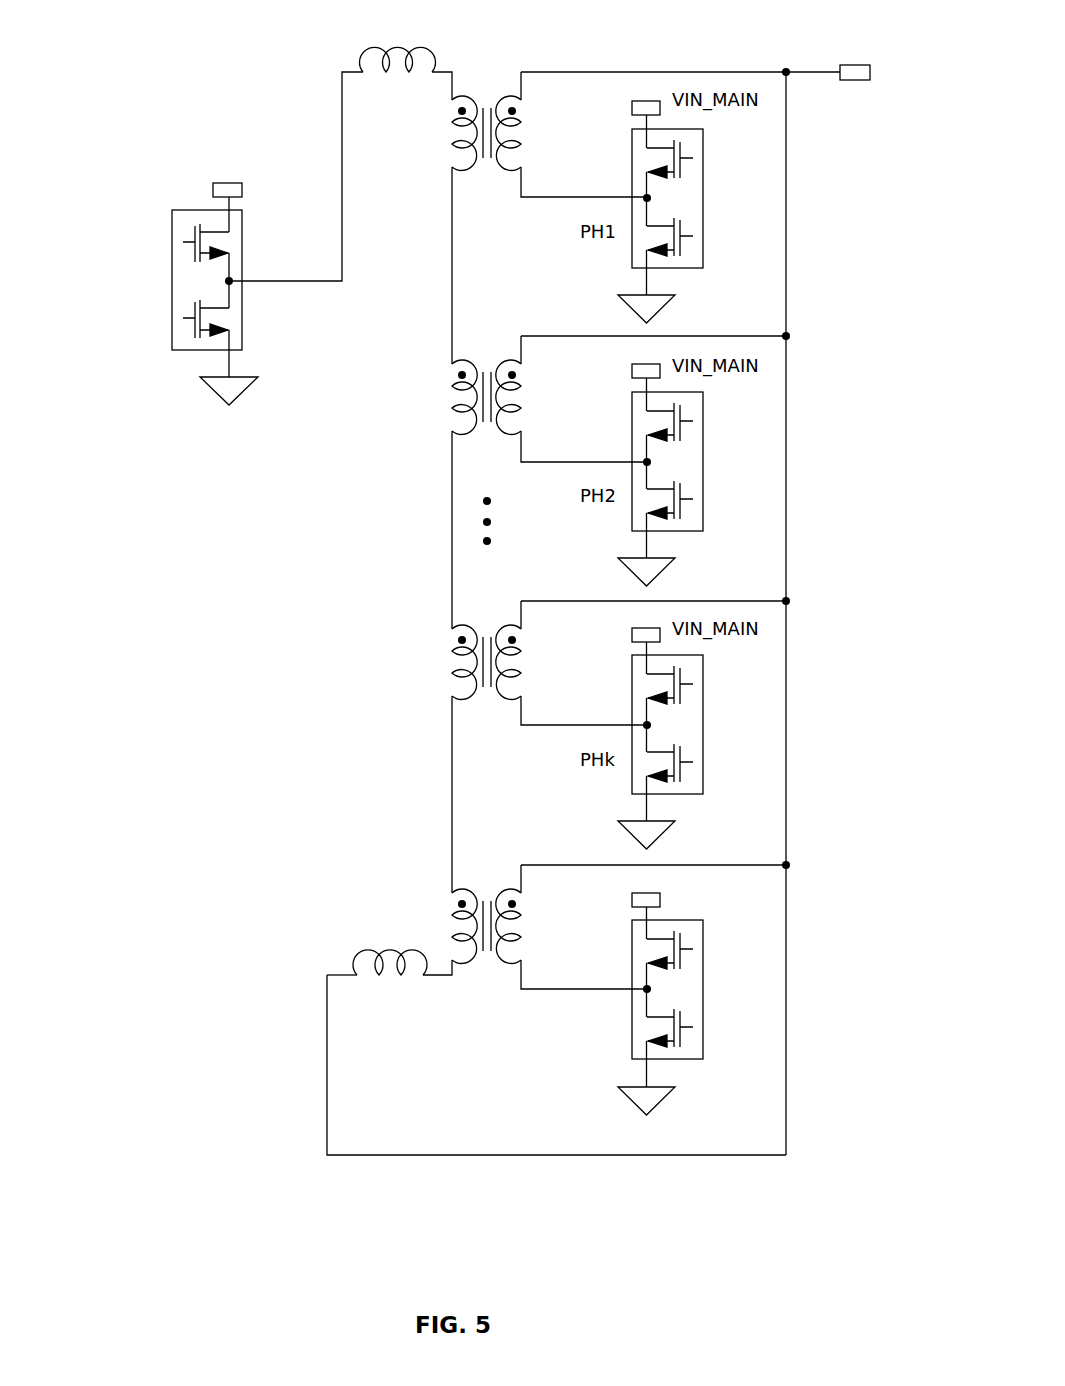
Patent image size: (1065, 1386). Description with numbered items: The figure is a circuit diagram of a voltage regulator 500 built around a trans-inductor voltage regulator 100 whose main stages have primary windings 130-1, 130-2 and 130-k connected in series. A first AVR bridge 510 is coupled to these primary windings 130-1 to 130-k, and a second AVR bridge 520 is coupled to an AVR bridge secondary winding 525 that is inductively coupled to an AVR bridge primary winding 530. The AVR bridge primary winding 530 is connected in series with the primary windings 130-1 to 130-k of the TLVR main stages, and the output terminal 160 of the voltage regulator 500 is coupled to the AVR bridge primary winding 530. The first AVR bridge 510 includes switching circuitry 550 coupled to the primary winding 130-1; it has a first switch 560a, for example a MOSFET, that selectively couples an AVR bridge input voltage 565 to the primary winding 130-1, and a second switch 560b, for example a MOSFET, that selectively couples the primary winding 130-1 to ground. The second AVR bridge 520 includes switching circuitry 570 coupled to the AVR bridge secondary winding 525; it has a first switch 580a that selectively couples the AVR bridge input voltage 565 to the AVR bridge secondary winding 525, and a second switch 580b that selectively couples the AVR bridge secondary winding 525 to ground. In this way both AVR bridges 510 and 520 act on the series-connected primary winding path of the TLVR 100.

The trans-inductor voltage regulator 100 is at (810, 752).
The voltage regulator 500 is at (583, 641).
The output terminal 160 is at (870, 66).
The first AVR bridge 510 is at (246, 214).
The switching circuitry 550 is at (147, 282).
The first switch 560a is at (185, 228).
The second switch 560b is at (187, 337).
The AVR bridge input voltage 565 is at (213, 184).
The primary winding 130-1 is at (448, 137).
The primary winding 130-2 is at (448, 413).
The primary winding 130-k is at (440, 677).
The AVR bridge primary winding 530 is at (556, 952).
The AVR bridge secondary winding 525 is at (503, 972).
The second AVR bridge 520 is at (677, 1008).
The switching circuitry 570 is at (729, 996).
The first switch 580a is at (692, 937).
The second switch 580b is at (695, 1050).